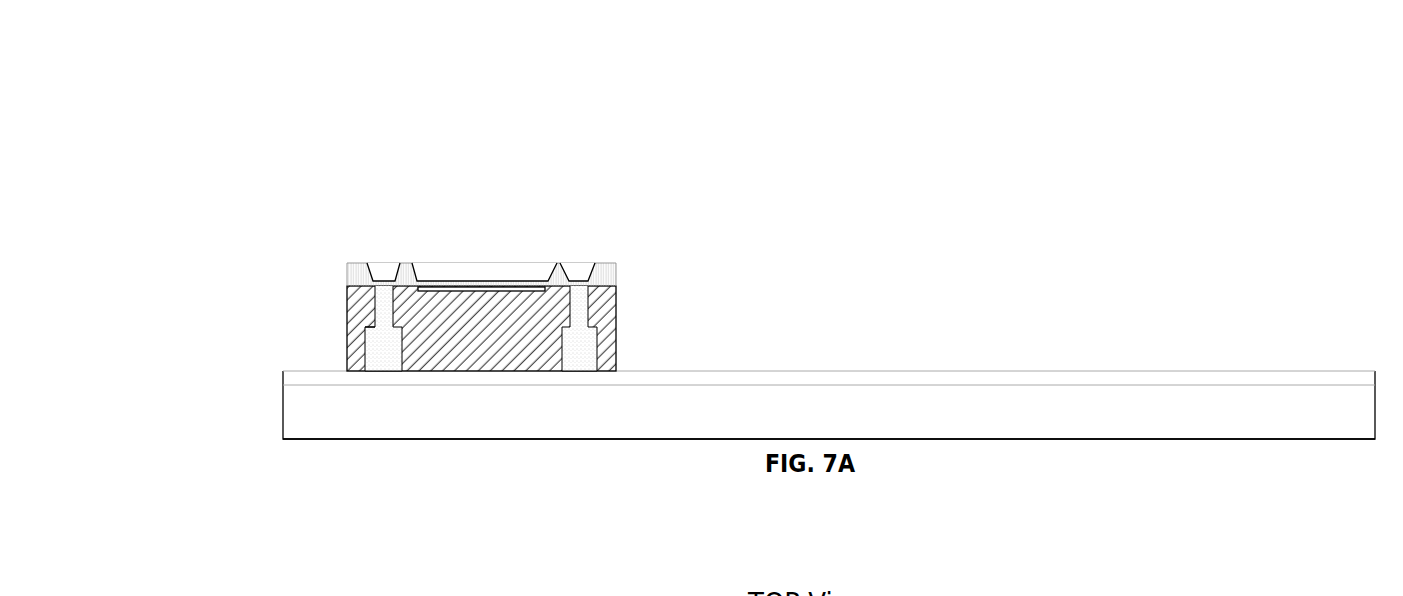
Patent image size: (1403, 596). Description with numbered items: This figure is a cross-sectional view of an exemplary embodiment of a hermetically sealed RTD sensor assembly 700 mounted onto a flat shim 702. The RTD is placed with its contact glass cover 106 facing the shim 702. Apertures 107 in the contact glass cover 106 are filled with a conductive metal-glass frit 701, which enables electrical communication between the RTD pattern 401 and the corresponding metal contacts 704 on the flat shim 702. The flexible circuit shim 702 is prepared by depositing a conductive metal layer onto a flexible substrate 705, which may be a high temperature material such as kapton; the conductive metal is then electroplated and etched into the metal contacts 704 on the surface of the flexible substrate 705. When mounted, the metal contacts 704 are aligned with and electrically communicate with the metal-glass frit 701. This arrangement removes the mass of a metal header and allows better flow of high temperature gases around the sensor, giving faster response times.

The semiconductor package assembly 700 is at (457, 208).
The contact glass cover 106 is at (607, 308).
The apertures 107 is at (373, 328).
The RTD pattern 401 is at (383, 287).
The conductive metal-glass frit 701 is at (373, 352).
The flat shim 702 is at (829, 405).
The metal contacts 704 is at (375, 383).
The flexible substrate 705 is at (607, 404).